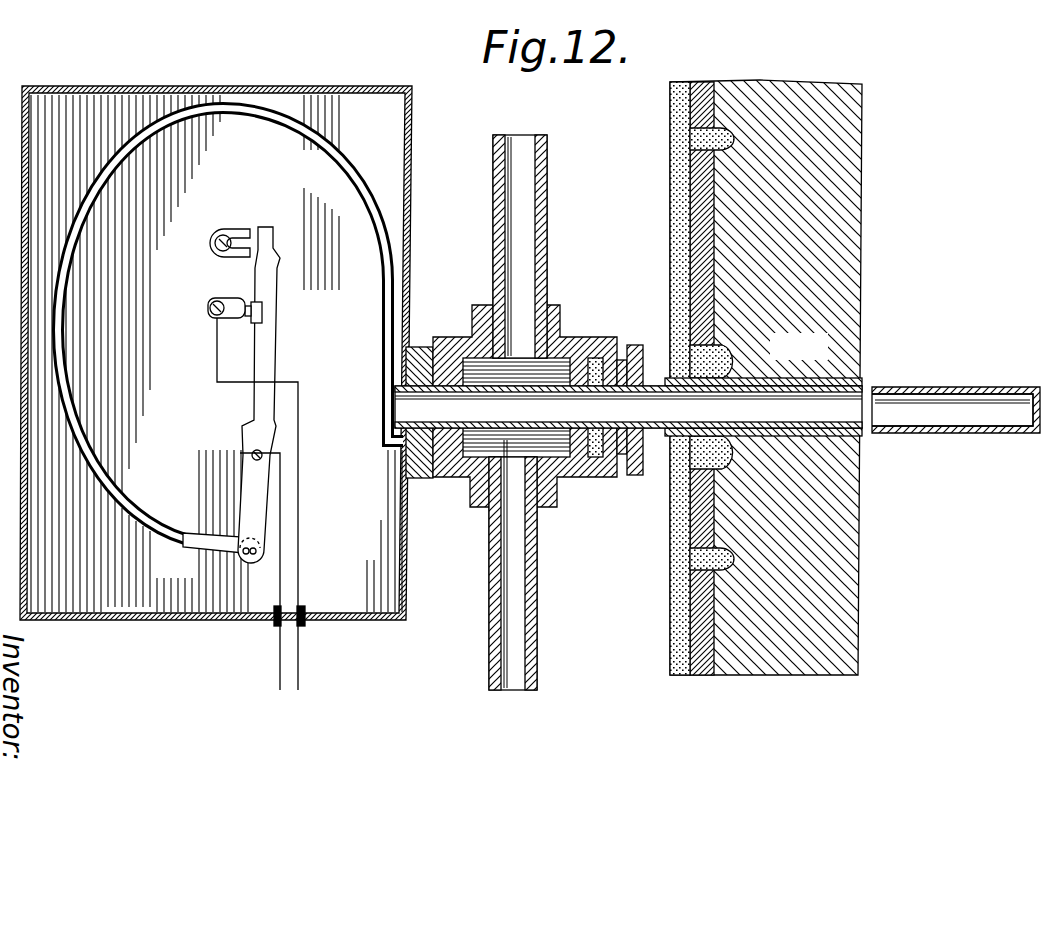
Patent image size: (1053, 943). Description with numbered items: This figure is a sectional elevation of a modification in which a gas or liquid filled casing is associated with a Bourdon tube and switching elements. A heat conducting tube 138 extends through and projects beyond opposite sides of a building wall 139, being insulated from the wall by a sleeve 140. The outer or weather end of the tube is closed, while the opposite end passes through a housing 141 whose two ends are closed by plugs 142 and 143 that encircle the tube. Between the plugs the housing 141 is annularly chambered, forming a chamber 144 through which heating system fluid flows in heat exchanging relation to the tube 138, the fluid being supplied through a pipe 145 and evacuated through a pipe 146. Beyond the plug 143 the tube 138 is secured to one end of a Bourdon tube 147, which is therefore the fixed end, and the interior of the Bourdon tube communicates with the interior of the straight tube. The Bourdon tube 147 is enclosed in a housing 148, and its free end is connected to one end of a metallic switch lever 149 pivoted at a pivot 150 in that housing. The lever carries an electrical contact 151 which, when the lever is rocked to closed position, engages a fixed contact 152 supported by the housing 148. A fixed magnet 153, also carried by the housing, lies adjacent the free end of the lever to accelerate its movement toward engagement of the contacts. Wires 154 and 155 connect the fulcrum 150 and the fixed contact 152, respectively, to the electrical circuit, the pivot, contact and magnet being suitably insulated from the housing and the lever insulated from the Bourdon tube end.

The heat conducting tube 138 is at (946, 387).
The building wall 139 is at (858, 270).
The sleeve 140 is at (786, 378).
The housing 141 is at (577, 337).
The plug 142 is at (635, 345).
The plug 143 is at (420, 337).
The annular chamber 144 is at (557, 446).
The supply pipe 145 is at (549, 211).
The evacuation pipe 146 is at (539, 578).
The Bourdon tube 147 is at (372, 243).
The housing 148 is at (413, 200).
The switch lever 149 is at (244, 505).
The pivot 150 is at (250, 456).
The electrical contact 151 is at (252, 322).
The fixed contact 152 is at (247, 297).
The magnet 153 is at (228, 228).
The wire 154 is at (263, 563).
The wire 155 is at (292, 576).